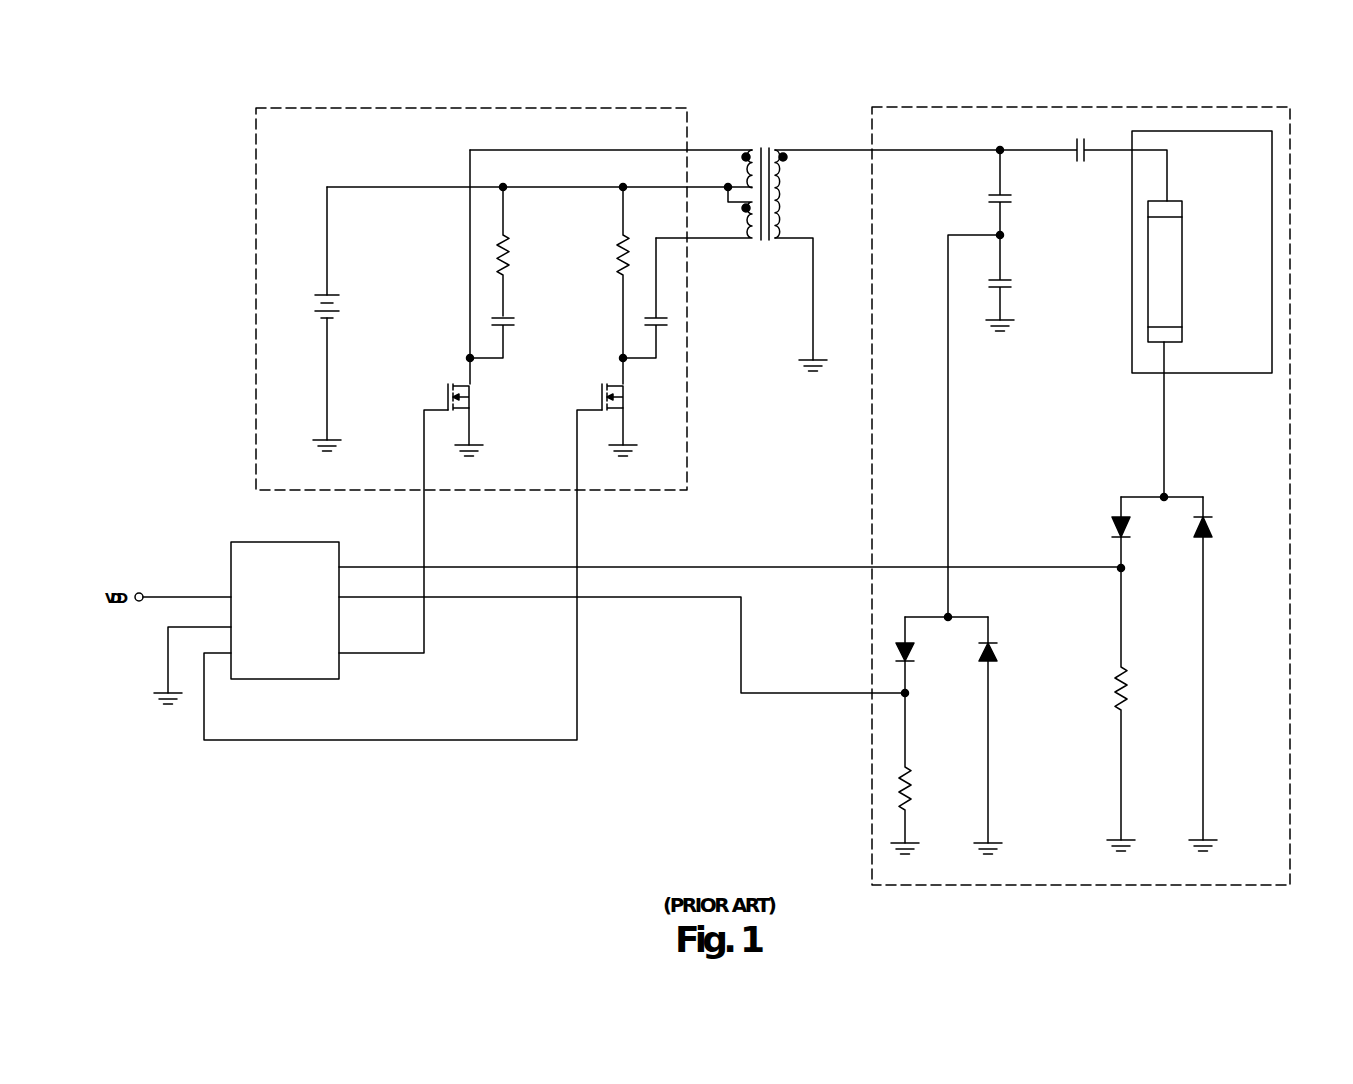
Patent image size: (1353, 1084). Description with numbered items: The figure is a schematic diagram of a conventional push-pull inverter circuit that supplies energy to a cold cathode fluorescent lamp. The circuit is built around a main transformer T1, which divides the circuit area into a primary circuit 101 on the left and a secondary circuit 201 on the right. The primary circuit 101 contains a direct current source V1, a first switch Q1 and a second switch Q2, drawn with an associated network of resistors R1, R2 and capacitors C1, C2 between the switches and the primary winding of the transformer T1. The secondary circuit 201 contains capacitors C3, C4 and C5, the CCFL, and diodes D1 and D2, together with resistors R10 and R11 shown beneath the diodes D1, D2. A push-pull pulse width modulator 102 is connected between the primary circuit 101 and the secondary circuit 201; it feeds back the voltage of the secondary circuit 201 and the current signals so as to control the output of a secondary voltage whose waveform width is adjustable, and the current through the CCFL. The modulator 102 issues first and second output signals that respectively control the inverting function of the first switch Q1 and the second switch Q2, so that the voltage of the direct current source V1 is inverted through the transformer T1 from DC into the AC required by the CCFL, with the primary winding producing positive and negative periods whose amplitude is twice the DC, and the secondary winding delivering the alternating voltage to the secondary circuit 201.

The primary circuit 101 is at (424, 108).
The push-pull pulse width modulator 102 is at (232, 541).
The secondary circuit 201 is at (977, 107).
The direct current V1 is at (339, 319).
The resistor R1 is at (513, 251).
The resistor R2 is at (633, 285).
The capacitor C1 is at (502, 335).
The capacitor C2 is at (629, 298).
The first switch Q1 is at (470, 420).
The second switch Q2 is at (623, 420).
The main transformer T1 is at (828, 249).
The capacitor C3 is at (1011, 191).
The capacitor C4 is at (1009, 283).
The capacitor C5 is at (1083, 160).
The element CCFL is at (1202, 314).
The diode D1 is at (1175, 671).
The diode D2 is at (959, 733).
The resistor R10 is at (1132, 709).
The resistor R11 is at (915, 773).